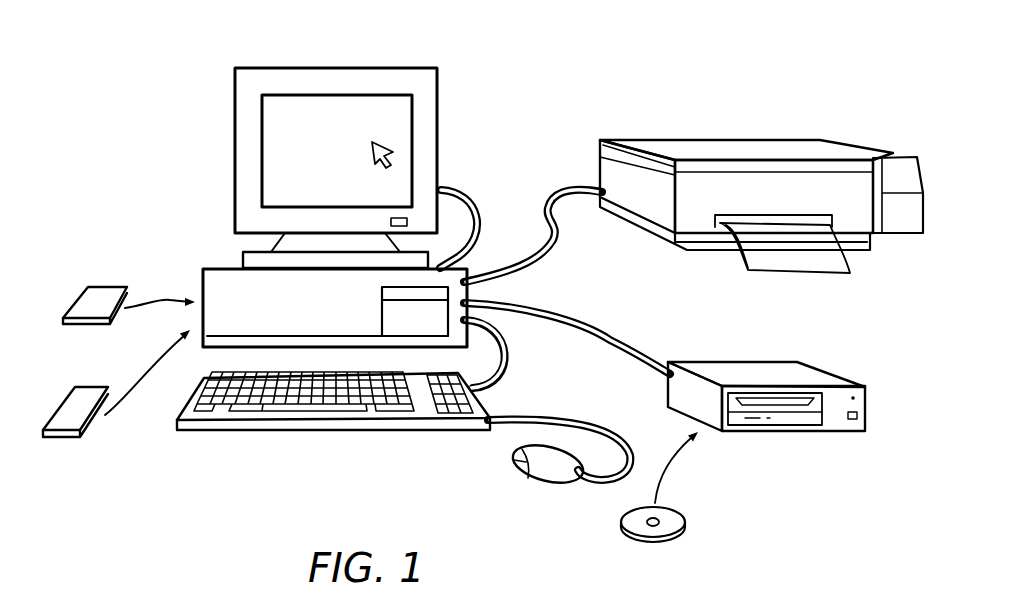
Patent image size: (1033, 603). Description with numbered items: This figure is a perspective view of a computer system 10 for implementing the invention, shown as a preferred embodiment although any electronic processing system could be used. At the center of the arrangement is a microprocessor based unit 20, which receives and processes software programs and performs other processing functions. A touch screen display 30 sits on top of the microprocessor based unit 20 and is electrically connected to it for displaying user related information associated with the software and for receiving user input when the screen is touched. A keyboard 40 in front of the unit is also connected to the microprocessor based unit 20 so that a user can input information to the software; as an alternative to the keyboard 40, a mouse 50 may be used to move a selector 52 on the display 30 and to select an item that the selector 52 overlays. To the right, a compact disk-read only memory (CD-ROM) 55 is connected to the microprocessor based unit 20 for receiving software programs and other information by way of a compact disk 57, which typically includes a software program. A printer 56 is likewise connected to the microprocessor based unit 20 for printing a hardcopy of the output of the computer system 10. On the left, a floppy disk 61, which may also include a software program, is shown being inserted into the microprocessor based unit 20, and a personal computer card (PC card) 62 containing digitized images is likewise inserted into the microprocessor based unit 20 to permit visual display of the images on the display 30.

The computer system 10 is at (534, 86).
The microprocessor based unit 20 is at (220, 268).
The touch screen display 30 is at (353, 68).
The keyboard 40 is at (277, 431).
The mouse 50 is at (542, 478).
The selector 52 is at (395, 148).
The compact disk-read only memory (CD-ROM) 55 is at (718, 362).
The printer 56 is at (676, 140).
The compact disk 57 is at (686, 520).
The floppy disk 61 is at (92, 286).
The personal computer card (PC card) 62 is at (88, 424).